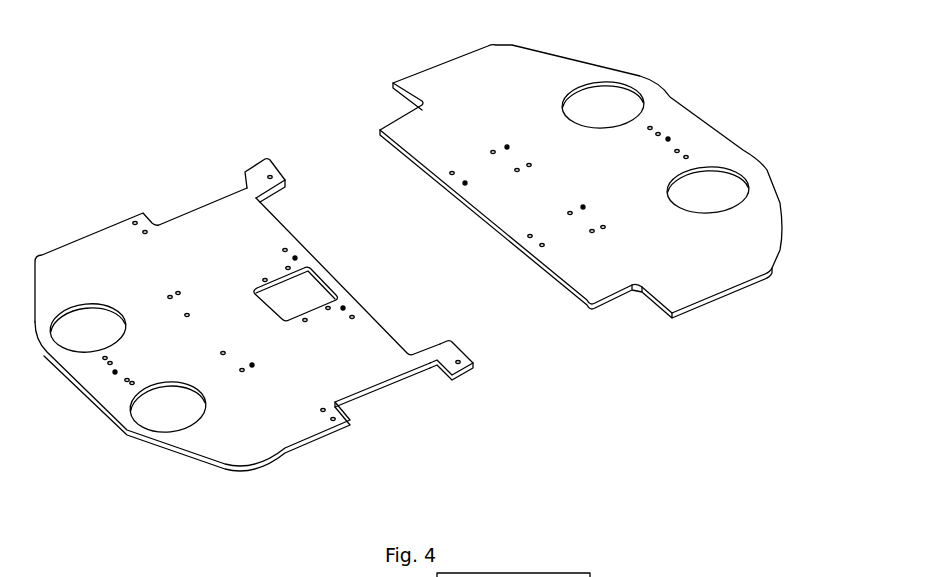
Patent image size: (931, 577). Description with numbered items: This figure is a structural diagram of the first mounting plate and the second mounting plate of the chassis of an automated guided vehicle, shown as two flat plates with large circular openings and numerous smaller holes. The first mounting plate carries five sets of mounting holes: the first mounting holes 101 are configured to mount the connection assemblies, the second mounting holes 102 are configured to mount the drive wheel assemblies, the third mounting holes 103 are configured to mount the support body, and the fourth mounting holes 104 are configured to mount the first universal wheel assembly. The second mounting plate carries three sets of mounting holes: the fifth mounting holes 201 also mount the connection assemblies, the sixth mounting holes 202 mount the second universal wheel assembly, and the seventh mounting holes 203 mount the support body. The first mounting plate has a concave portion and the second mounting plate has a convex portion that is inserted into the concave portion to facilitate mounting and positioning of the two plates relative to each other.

The first mounting holes 101 is at (343, 308).
The second mounting holes 102 is at (261, 167).
The third mounting holes 103 is at (235, 357).
The fourth mounting holes 104 is at (115, 373).
The fifth mounting holes 201 is at (528, 237).
The sixth mounting holes 202 is at (669, 139).
The seventh mounting holes 203 is at (583, 207).